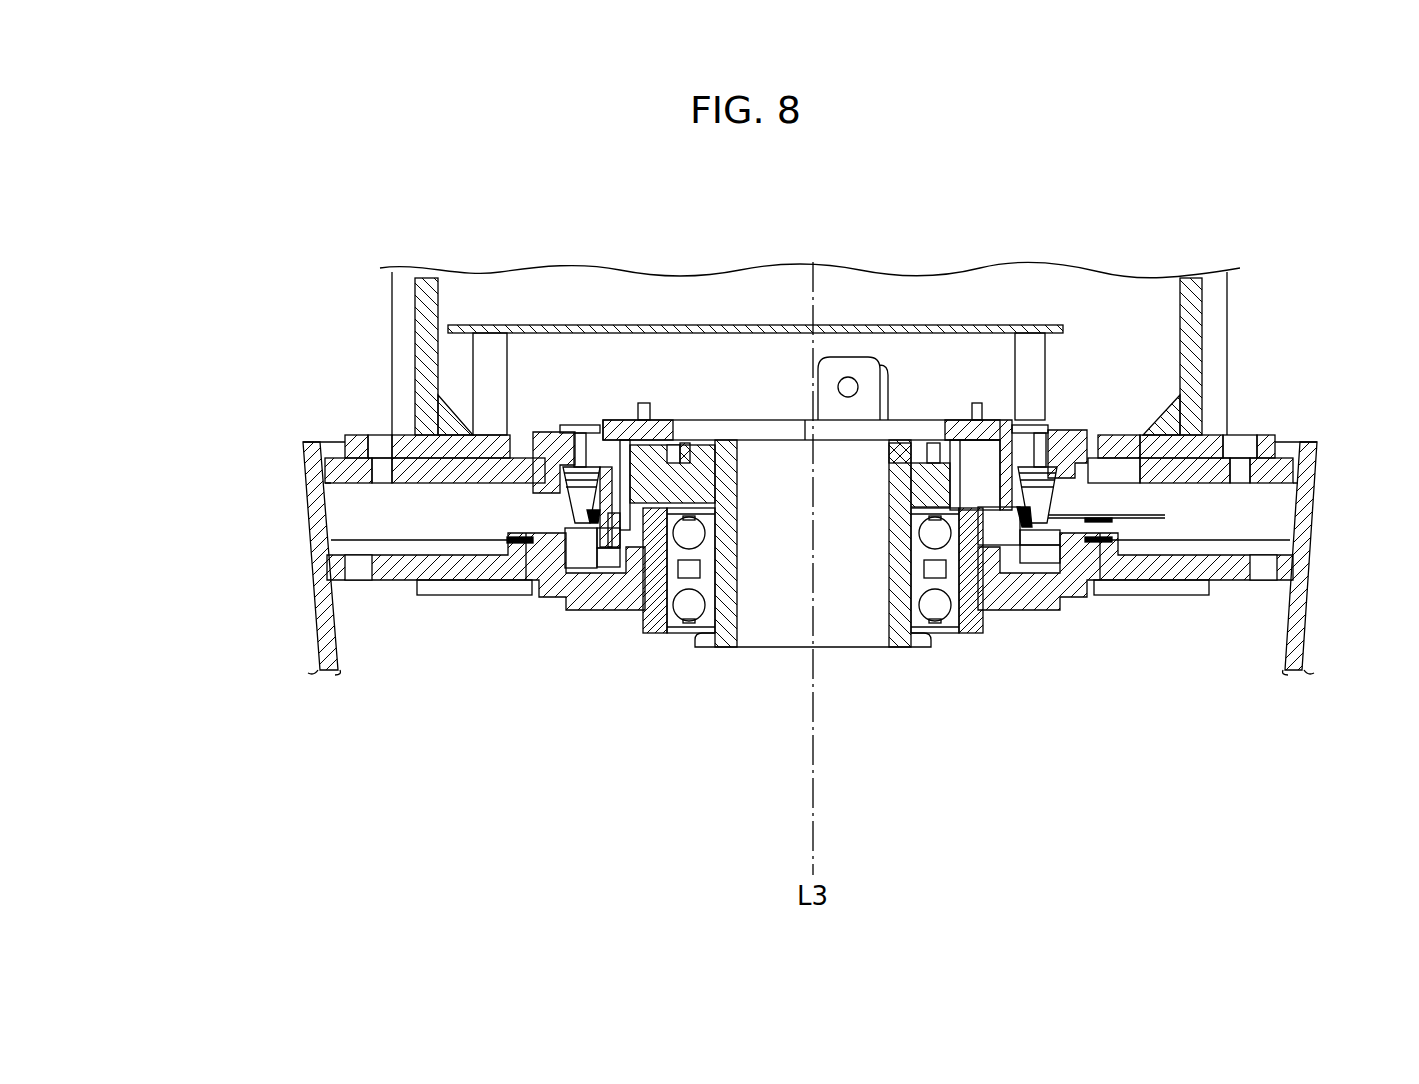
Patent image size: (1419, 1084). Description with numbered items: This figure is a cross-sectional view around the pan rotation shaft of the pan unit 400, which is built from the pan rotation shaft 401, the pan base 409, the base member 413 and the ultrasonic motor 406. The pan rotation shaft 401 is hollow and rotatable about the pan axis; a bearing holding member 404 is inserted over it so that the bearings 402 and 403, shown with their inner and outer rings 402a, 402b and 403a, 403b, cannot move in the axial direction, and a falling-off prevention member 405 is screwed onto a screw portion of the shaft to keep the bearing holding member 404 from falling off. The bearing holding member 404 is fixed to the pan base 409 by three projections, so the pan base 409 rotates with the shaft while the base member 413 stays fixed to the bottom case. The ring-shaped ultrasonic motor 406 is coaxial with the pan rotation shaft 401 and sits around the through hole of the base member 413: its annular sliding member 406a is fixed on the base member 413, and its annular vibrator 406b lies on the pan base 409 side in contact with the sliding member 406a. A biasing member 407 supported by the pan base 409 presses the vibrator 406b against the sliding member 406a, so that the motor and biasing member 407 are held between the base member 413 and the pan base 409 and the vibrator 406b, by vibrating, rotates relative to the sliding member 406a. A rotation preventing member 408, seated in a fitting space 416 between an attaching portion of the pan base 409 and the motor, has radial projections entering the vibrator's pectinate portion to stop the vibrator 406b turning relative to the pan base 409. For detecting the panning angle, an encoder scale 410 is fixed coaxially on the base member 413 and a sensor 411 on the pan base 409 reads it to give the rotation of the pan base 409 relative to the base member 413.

The pan unit 400 is at (250, 292).
The pan rotation shaft 401 is at (722, 622).
The bearing 402 is at (923, 646).
The inner ring of second bearing 402a is at (912, 625).
The outer ring of second bearing 402b is at (946, 625).
The bearing 403 is at (636, 634).
The inner ring of first bearing 403a is at (683, 615).
The outer ring of first bearing 403b is at (660, 570).
The bearing holding member 404 is at (655, 465).
The falling-off prevention member 405 is at (922, 460).
The ultrasonic motor 406 is at (616, 535).
The sliding member 406a is at (575, 550).
The vibrator 406b is at (583, 512).
The biasing member 407 is at (1045, 472).
The rotation preventing member 408 is at (1000, 582).
The pan base 409 is at (405, 467).
The scale 410 is at (1098, 595).
The sensor 411 is at (1115, 520).
The base member 413 is at (540, 597).
The fitting space 416 is at (582, 428).